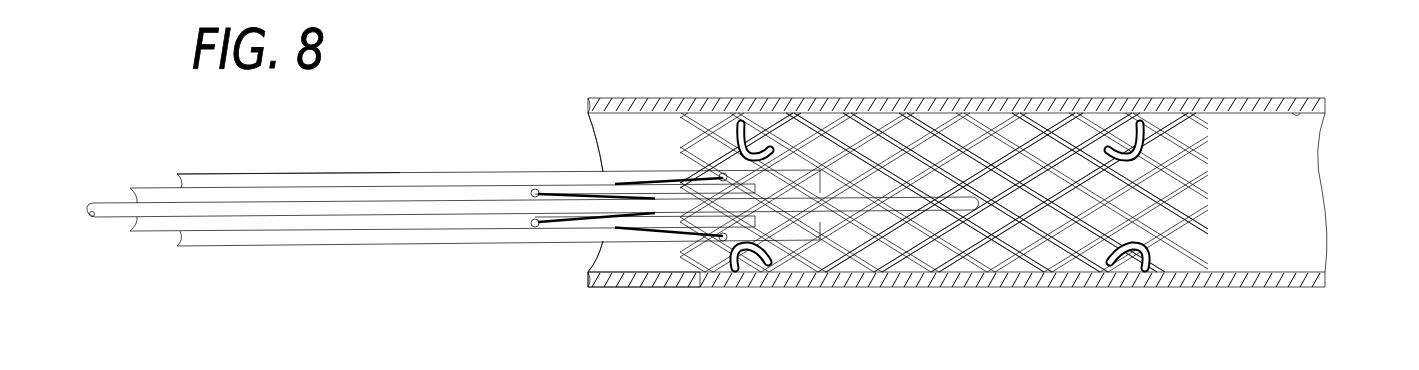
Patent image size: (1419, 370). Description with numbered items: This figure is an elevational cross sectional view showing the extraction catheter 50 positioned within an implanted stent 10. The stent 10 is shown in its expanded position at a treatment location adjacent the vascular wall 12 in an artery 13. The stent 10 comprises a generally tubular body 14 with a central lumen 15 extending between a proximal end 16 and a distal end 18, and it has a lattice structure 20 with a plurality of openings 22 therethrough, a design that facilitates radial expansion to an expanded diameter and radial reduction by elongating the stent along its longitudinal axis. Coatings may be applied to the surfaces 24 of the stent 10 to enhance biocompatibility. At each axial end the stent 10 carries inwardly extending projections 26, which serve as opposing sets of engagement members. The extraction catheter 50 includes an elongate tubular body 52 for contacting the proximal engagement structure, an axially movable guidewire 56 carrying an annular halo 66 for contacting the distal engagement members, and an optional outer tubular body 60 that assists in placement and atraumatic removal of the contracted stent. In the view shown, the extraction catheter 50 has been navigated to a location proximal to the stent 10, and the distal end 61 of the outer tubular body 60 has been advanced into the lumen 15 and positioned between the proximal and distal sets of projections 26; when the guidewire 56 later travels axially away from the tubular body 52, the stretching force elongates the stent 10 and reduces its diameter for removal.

The stent 10 is at (1173, 123).
The vascular wall 12 is at (1296, 105).
The artery 13 is at (606, 245).
The tubular body 14 is at (962, 142).
The central lumen 15 is at (1260, 186).
The proximal end 16 is at (686, 292).
The distal end 18 is at (1210, 288).
The lattice structure 20 is at (1040, 128).
The openings 22 is at (886, 150).
The surfaces 24 is at (798, 113).
The inwardly extending projections 26 is at (733, 132).
The extraction catheter 50 is at (375, 159).
The tubular body 52 is at (440, 246).
The guidewire 56 is at (244, 216).
The outer tubular body 60 is at (329, 232).
The distal end 61 is at (824, 243).
The annular halo 66 is at (531, 189).